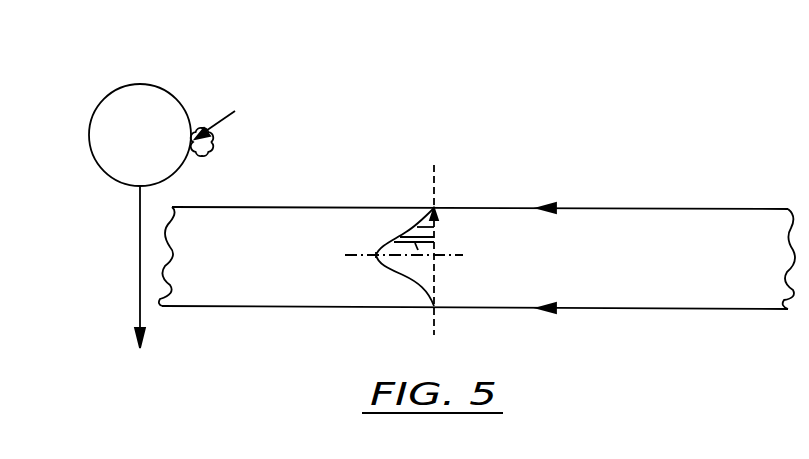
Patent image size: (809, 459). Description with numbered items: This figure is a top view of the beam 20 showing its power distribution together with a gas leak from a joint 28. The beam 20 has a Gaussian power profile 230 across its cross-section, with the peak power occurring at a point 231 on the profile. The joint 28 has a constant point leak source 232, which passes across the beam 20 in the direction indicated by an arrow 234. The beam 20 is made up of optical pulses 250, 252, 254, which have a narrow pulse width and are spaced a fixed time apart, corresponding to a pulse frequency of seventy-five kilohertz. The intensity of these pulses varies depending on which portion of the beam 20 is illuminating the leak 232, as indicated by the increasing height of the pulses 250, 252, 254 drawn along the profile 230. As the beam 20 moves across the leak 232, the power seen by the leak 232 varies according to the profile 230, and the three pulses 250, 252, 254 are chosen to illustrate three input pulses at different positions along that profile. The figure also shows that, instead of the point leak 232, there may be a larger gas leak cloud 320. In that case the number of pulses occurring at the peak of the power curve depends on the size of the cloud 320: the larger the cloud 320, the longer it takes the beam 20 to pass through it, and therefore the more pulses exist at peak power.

The beam 20 is at (662, 208).
The joint 28 is at (101, 102).
The Gaussian power profile 230 is at (386, 240).
The point of peak power 231 is at (376, 254).
The constant point leak source 232 is at (240, 117).
The arrow 234 is at (140, 282).
The optical pulse 250 is at (436, 228).
The optical pulse 252 is at (410, 242).
The optical pulse 254 is at (415, 243).
The gas leak cloud 320 is at (206, 157).